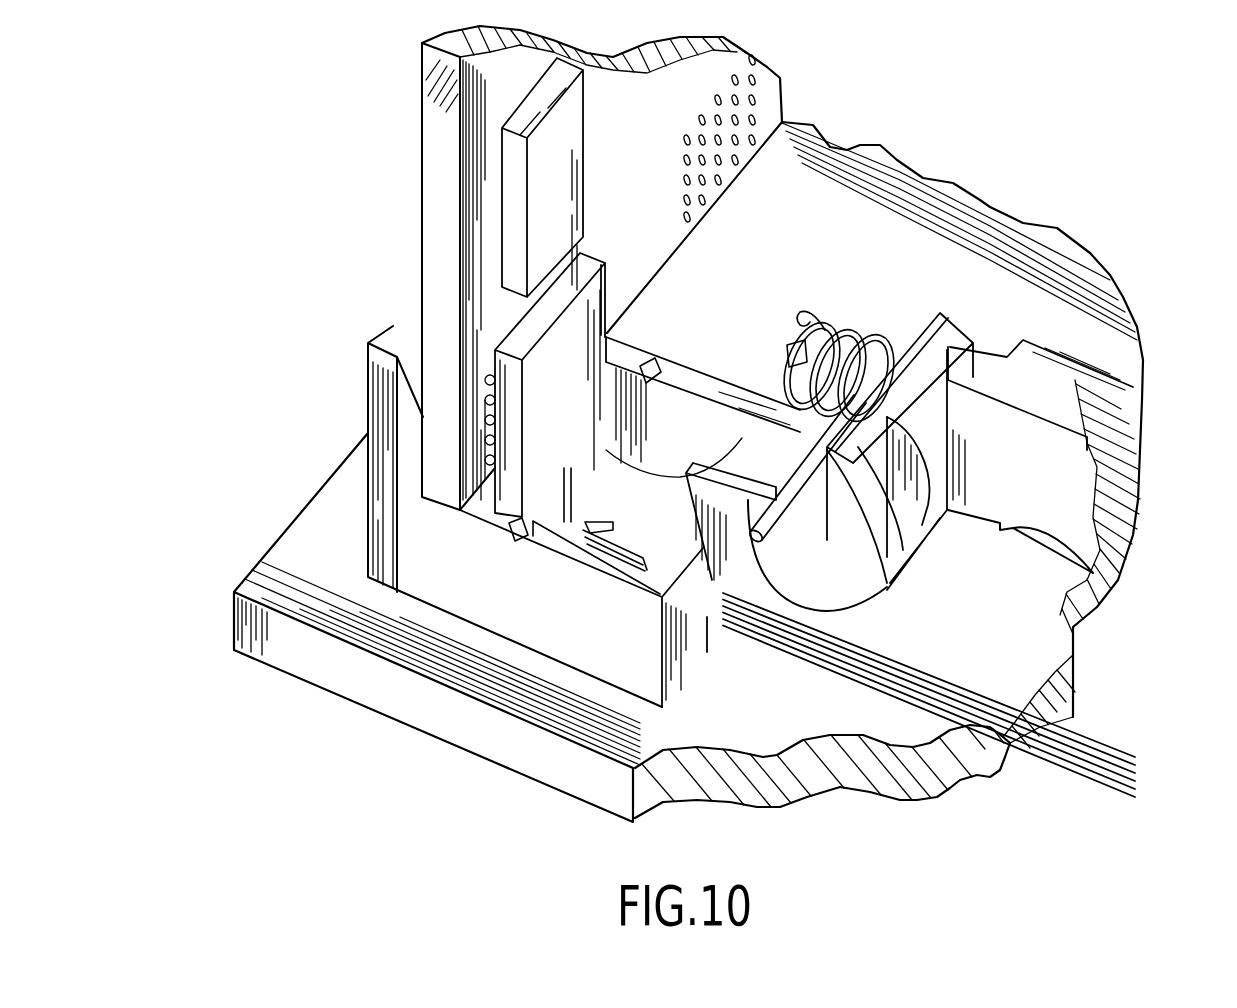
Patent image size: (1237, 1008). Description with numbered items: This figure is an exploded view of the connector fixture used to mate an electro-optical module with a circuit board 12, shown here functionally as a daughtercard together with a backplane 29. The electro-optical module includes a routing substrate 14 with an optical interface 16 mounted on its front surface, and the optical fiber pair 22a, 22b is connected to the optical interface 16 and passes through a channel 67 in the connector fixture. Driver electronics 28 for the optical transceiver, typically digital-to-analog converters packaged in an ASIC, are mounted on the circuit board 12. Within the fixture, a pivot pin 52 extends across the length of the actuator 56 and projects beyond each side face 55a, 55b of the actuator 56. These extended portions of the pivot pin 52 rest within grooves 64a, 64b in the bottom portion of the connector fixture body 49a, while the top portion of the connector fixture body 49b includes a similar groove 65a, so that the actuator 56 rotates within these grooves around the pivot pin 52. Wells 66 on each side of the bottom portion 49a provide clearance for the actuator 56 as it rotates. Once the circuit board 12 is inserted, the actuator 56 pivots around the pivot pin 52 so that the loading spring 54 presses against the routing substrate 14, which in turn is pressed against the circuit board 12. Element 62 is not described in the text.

The circuit board 12 is at (438, 156).
The routing substrate 14 is at (513, 343).
The optical interface 16 is at (568, 498).
The optical fiber 22a is at (1138, 779).
The optical fiber 22b is at (1138, 748).
The driver electronics 28 is at (528, 118).
The backplane 29 is at (272, 582).
The bottom portion of the connector fixture body 49a is at (388, 335).
The top portion of the connector fixture body 49b is at (1080, 407).
The pivot pin 52 is at (770, 585).
The loading spring 54 is at (870, 318).
The side face 55a is at (860, 590).
The side face 55b is at (954, 346).
The actuator 56 is at (940, 440).
The holder block 62 is at (680, 482).
The groove 64a is at (510, 535).
The groove 64b is at (650, 366).
The groove 65a is at (1080, 545).
The wells 66 is at (639, 490).
The channel 67 is at (708, 638).